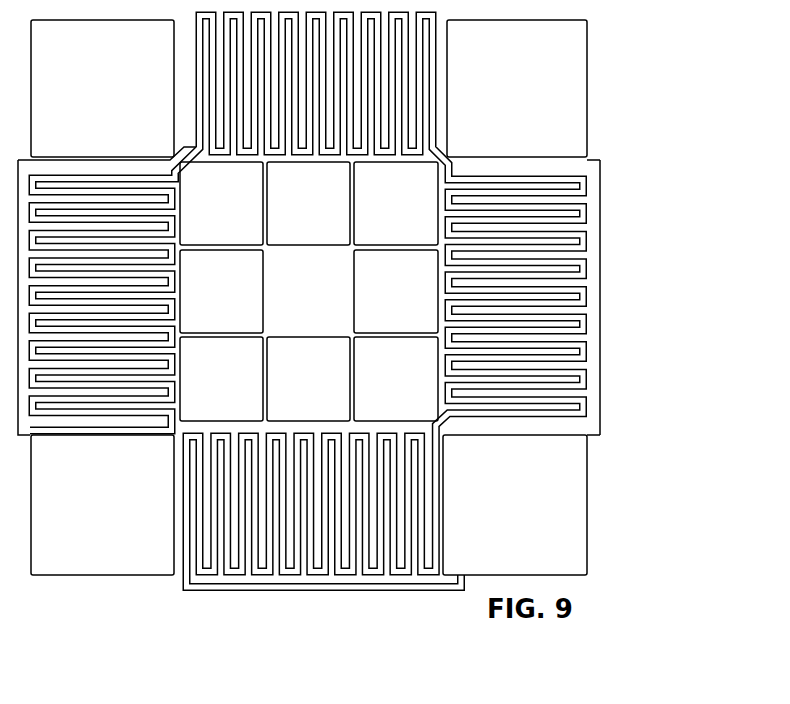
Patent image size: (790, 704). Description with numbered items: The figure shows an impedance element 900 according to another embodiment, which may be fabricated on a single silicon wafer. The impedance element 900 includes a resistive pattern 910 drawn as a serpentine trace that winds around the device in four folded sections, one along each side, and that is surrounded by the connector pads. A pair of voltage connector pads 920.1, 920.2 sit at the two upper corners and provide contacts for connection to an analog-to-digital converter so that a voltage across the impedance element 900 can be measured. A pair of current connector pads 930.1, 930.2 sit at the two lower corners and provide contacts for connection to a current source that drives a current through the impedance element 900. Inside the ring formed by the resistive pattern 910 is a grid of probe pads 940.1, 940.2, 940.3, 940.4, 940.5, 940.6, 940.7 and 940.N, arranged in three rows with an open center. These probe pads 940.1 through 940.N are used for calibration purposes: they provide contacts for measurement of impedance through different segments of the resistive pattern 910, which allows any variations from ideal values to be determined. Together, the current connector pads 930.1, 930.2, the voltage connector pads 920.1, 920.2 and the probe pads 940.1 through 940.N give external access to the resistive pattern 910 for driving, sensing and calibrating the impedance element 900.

The impedance element 900 is at (389, 328).
The resistive pattern 910 is at (625, 122).
The voltage connector pad 920.1 is at (102, 88).
The voltage connector pad 920.2 is at (517, 88).
The current connector pad 930.1 is at (102, 505).
The current connector pad 930.2 is at (515, 505).
The probe pad 940.1 is at (221, 203).
The probe pad 940.2 is at (308, 203).
The probe pad 940.3 is at (396, 203).
The probe pad 940.4 is at (221, 291).
The probe pad 940.5 is at (396, 291).
The probe pad 940.6 is at (221, 379).
The probe pad 940.7 is at (308, 379).
The probe pad 940.N is at (396, 379).